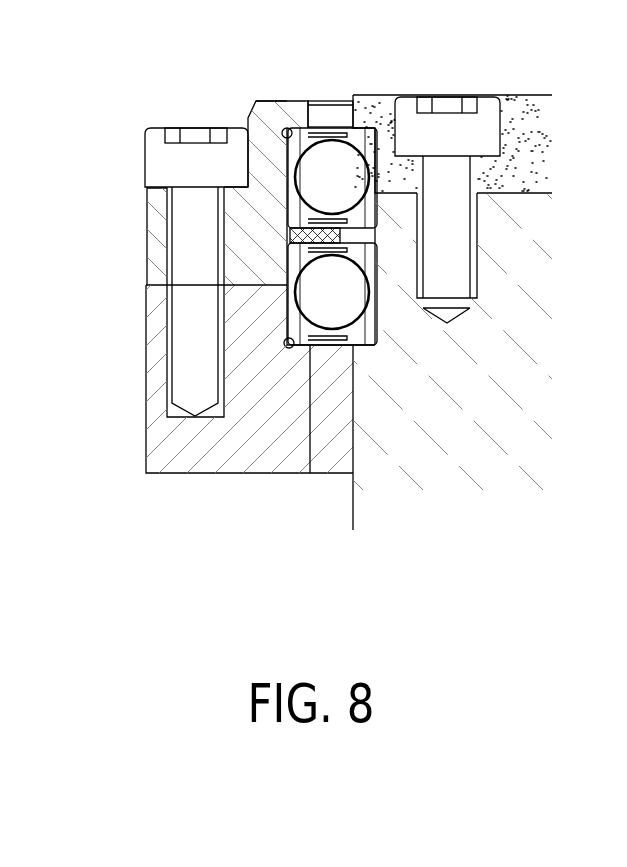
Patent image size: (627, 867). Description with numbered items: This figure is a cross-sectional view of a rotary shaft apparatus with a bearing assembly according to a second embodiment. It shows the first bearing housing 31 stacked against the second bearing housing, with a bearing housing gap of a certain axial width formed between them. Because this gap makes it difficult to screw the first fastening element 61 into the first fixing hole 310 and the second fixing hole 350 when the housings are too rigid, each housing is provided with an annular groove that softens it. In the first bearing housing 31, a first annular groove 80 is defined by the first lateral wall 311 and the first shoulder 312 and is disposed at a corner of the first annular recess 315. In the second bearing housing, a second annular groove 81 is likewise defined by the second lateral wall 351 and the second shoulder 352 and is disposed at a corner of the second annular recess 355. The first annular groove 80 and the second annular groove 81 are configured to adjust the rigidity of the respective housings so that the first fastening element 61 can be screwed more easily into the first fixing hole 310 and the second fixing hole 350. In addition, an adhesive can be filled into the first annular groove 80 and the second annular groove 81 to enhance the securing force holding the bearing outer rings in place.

The first bearing housing 31 is at (238, 116).
The first lateral wall 311 is at (262, 165).
The first shoulder 312 is at (305, 115).
The first annular recess 315 is at (349, 120).
The first annular groove 80 is at (285, 130).
The second annular groove 81 is at (288, 347).
The first fastening element 61 is at (163, 163).
The first fixing hole 310 is at (163, 213).
The second fixing hole 350 is at (166, 394).
The second lateral wall 351 is at (233, 318).
The second annular recess 355 is at (283, 335).
The second shoulder 352 is at (333, 443).